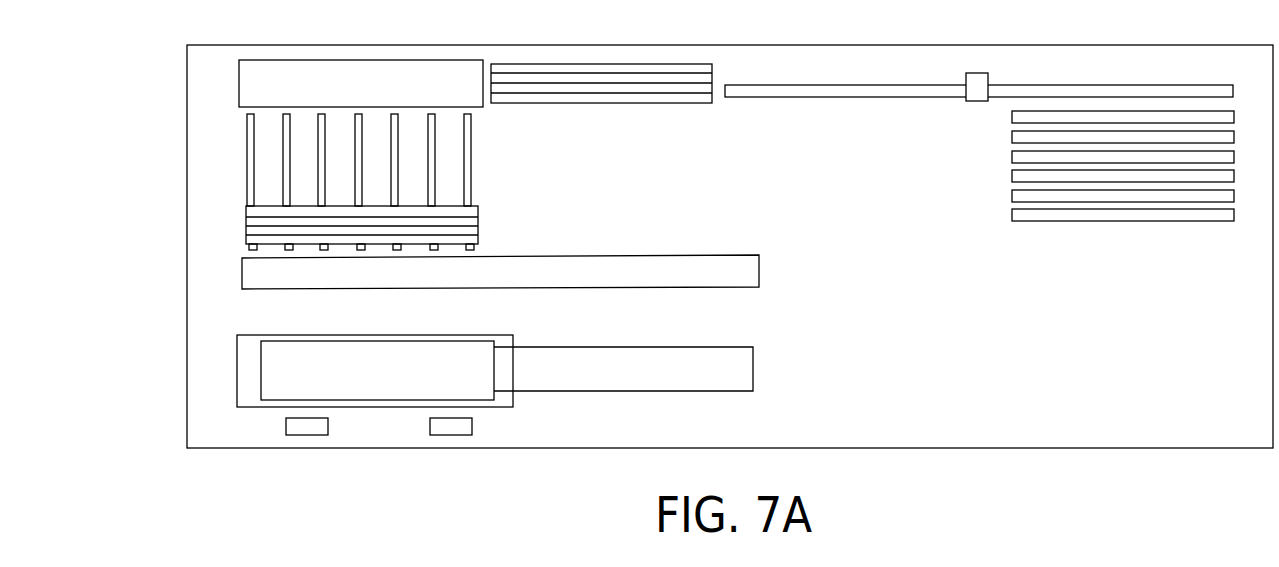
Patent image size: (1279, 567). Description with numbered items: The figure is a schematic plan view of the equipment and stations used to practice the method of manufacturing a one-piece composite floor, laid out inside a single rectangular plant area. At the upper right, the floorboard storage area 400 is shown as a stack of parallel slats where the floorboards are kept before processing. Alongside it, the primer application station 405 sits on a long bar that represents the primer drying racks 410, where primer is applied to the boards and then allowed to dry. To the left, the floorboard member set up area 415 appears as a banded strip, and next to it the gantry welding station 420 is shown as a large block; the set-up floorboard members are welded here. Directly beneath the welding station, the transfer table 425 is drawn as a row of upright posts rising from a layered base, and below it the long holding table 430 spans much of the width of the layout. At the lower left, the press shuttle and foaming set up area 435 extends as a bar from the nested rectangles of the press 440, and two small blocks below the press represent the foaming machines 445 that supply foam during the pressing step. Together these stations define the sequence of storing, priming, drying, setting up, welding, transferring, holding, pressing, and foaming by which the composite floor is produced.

The floorboard storage area 400 is at (1165, 238).
The primer application station 405 is at (988, 78).
The primer drying racks 410 is at (827, 98).
The floorboard member set up area 415 is at (607, 97).
The gantry welding station 420 is at (305, 66).
The transfer table 425 is at (251, 147).
The holding table 430 is at (241, 286).
The press shuttle and foaming set up area 435 is at (755, 380).
The press 440 is at (355, 336).
The foaming machines 445 is at (302, 435).